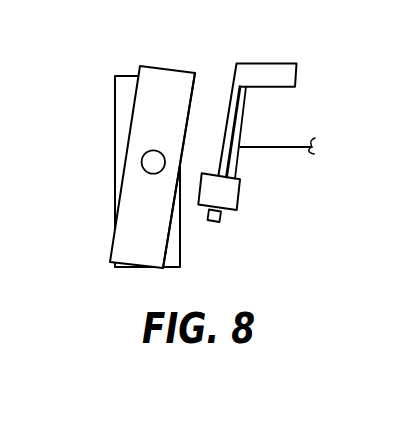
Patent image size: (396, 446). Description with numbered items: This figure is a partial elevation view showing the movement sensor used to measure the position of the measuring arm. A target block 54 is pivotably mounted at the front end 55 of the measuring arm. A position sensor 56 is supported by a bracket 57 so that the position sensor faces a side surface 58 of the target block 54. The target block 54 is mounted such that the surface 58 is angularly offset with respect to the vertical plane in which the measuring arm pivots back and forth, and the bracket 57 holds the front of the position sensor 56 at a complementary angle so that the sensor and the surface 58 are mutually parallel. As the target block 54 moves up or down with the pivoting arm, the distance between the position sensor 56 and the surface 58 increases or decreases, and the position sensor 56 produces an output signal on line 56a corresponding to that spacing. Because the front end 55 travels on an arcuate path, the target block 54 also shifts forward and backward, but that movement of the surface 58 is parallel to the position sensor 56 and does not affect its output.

The target block 54 is at (142, 255).
The front end of the measuring arm 55 is at (118, 92).
The position sensor 56 is at (228, 198).
The line 56a is at (287, 148).
The bracket 57 is at (240, 113).
The side surface of the target block 58 is at (173, 233).